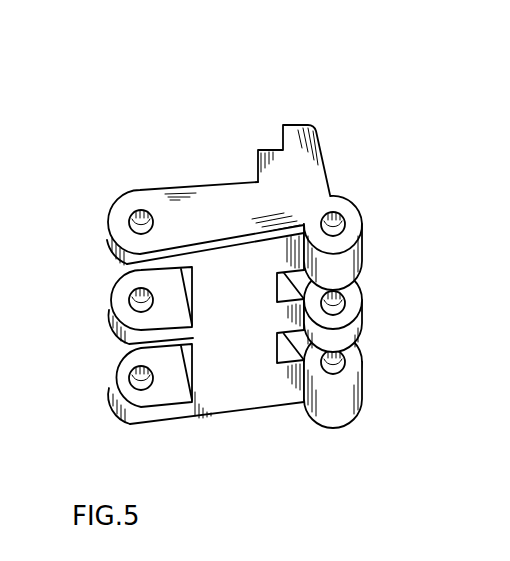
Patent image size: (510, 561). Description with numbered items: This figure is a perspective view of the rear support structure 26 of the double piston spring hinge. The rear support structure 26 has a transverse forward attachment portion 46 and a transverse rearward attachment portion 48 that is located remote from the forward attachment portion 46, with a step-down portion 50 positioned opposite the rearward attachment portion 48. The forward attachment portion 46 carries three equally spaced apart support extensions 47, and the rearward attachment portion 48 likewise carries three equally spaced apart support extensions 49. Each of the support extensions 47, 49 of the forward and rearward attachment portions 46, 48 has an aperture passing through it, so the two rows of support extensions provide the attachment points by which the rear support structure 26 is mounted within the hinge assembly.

The rear support structure 26 is at (318, 90).
The transverse forward attachment portion 46 is at (118, 192).
The support extensions 47 is at (120, 222).
The transverse rearward attachment portion 48 is at (350, 430).
The support extensions 49 is at (352, 262).
The step-down portion 50 is at (263, 147).